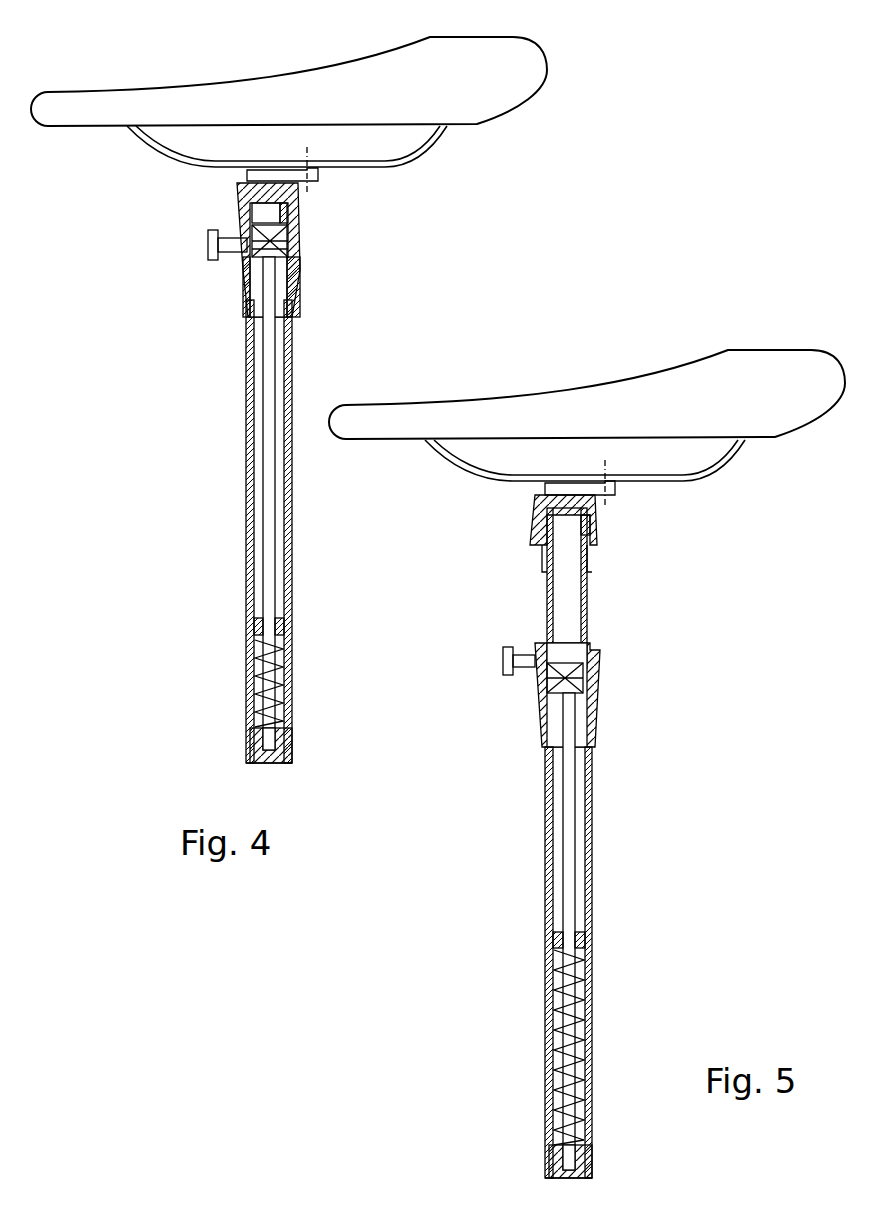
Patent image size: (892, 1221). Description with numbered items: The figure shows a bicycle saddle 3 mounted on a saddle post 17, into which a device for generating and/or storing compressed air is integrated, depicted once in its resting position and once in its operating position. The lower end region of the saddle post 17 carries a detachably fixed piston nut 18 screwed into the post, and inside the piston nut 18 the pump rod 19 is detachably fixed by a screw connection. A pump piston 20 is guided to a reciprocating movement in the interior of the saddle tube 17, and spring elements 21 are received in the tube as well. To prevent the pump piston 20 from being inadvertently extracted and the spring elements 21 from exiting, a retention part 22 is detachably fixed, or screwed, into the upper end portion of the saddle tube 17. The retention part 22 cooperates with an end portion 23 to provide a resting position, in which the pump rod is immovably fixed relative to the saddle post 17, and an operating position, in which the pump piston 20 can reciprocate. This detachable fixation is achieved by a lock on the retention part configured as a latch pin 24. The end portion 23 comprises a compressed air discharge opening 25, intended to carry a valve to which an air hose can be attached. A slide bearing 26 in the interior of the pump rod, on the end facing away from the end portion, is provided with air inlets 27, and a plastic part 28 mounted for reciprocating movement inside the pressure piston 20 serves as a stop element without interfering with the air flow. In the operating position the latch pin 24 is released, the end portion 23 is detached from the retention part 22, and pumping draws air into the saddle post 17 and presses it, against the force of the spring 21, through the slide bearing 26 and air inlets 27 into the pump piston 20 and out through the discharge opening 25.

In FIG. 4, the bicycle saddle 3 is at (502, 83).
In FIG. 5, the bicycle saddle 3 is at (690, 393).
In FIG. 4, the saddle post 17 is at (215, 535).
In FIG. 5, the saddle post 17 is at (640, 830).
In FIG. 4, the piston nut 18 is at (258, 747).
In FIG. 5, the piston nut 18 is at (560, 1158).
In FIG. 4, the pump rod 19 is at (270, 723).
In FIG. 5, the pump rod 19 is at (570, 987).
In FIG. 4, the pump piston 20 is at (245, 457).
In FIG. 5, the pump piston 20 is at (585, 593).
In FIG. 4, the spring elements 21 is at (258, 700).
In FIG. 5, the spring elements 21 is at (560, 1037).
In FIG. 4, the retention part 22 is at (290, 273).
In FIG. 5, the retention part 22 is at (580, 680).
In FIG. 4, the end portion 23 is at (243, 190).
In FIG. 5, the end portion 23 is at (537, 500).
In FIG. 4, the latch pin 24 is at (228, 248).
In FIG. 5, the latch pin 24 is at (510, 665).
In FIG. 4, the compressed air discharge opening 25 is at (293, 213).
In FIG. 5, the compressed air discharge opening 25 is at (590, 528).
In FIG. 4, the slide bearing 26 is at (255, 624).
In FIG. 4, the air inlets 27 is at (288, 630).
In FIG. 4, the plastic part 28 is at (287, 242).